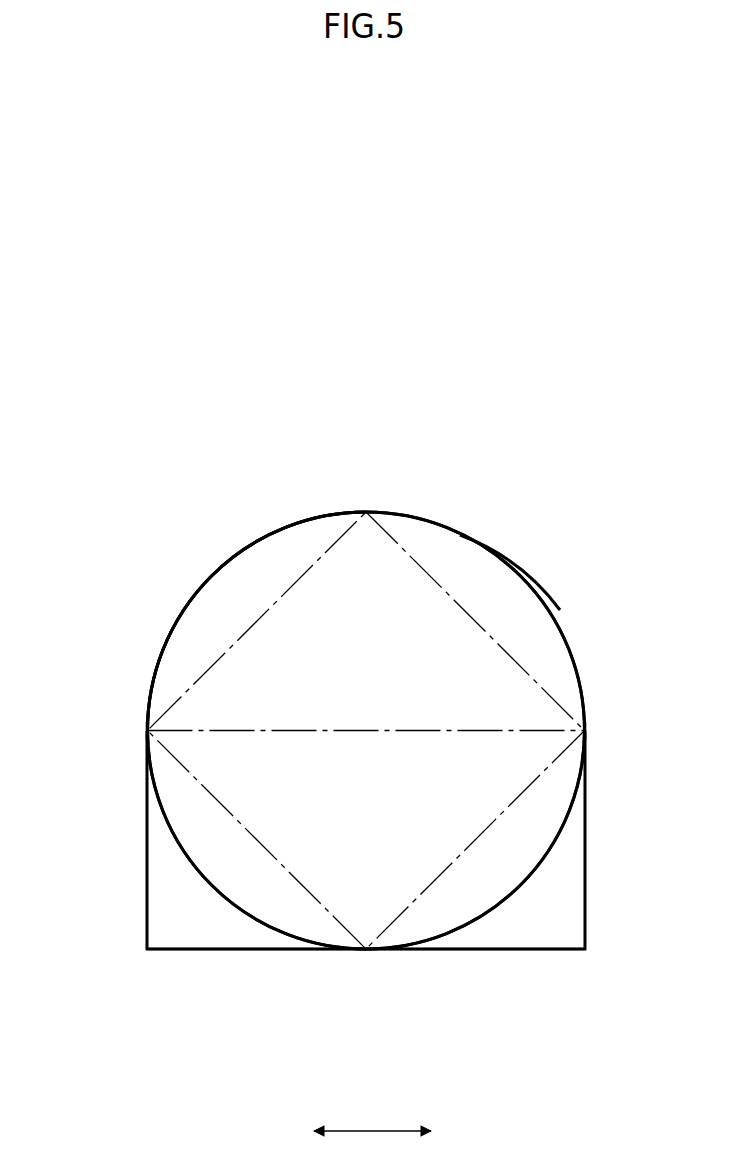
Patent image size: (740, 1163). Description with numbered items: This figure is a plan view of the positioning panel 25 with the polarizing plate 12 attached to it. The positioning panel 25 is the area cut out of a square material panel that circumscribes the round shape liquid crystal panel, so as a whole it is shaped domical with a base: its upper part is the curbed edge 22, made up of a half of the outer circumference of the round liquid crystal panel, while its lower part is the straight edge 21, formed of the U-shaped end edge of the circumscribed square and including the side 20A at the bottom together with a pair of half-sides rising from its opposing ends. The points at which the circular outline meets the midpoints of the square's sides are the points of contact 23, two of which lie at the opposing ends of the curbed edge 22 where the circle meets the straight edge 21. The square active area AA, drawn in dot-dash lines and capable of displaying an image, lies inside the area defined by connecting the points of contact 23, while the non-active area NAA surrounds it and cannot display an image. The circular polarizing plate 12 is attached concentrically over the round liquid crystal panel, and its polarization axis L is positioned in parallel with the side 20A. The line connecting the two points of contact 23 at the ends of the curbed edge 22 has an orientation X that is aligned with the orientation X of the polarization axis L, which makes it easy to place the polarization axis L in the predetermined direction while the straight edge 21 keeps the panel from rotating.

The positioning panel 25 is at (138, 531).
The polarizing plate 12 is at (538, 592).
The curbed edge 22 is at (245, 548).
The straight edge 21 is at (585, 880).
The side 20A is at (234, 951).
The point of contact 23 is at (146, 731).
The active area AA is at (425, 567).
The non-active area NAA is at (480, 572).
The polarization axis L is at (452, 730).
The orientation X is at (372, 1147).